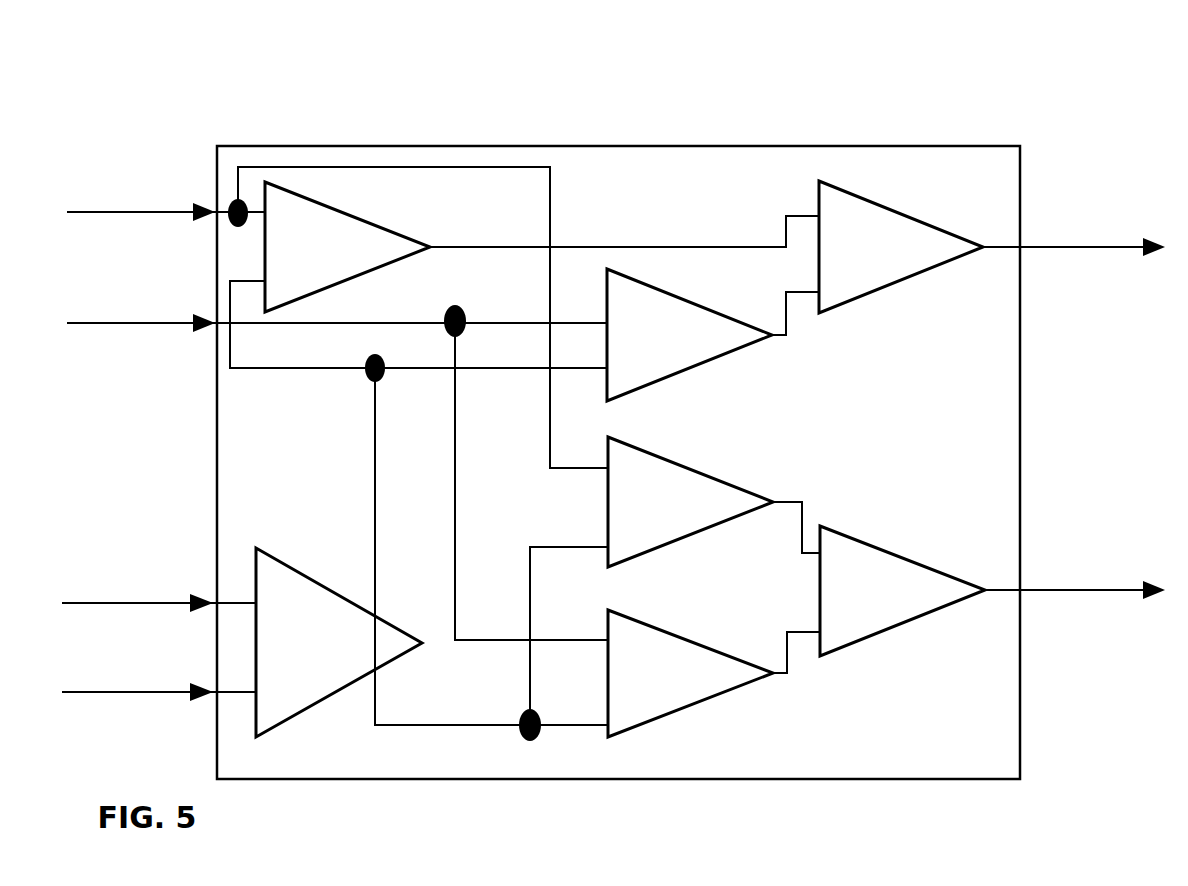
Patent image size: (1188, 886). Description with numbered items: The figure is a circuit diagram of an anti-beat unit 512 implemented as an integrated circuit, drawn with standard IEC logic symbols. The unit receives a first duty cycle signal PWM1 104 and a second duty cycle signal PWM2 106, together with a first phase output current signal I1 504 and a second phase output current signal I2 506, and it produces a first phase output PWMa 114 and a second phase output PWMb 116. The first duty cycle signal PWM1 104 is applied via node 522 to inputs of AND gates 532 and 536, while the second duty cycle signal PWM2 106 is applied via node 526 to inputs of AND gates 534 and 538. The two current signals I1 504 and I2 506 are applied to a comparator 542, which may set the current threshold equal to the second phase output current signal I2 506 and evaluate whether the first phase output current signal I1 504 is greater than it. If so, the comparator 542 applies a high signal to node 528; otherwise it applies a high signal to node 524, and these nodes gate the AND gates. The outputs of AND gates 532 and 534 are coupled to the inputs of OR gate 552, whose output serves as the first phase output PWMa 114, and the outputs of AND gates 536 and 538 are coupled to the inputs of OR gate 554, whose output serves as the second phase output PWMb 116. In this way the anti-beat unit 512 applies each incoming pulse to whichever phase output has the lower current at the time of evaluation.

The anti-beat unit 512 is at (618, 402).
The first duty cycle signal PWM1 104 is at (160, 209).
The second duty cycle signal PWM2 106 is at (160, 320).
The first phase output current signal I1 504 is at (120, 598).
The second phase output current signal I2 506 is at (120, 687).
The node 522 is at (381, 282).
The node 524 is at (419, 503).
The node 526 is at (526, 448).
The node 528 is at (520, 656).
The AND gate 532 is at (542, 247).
The AND gate 534 is at (713, 349).
The AND gate 536 is at (714, 498).
The AND gate 538 is at (714, 659).
The comparator 542 is at (339, 605).
The OR gate 552 is at (904, 236).
The OR gate 554 is at (902, 577).
The first phase output PWMa 114 is at (1072, 237).
The second phase output PWMb 116 is at (1072, 580).